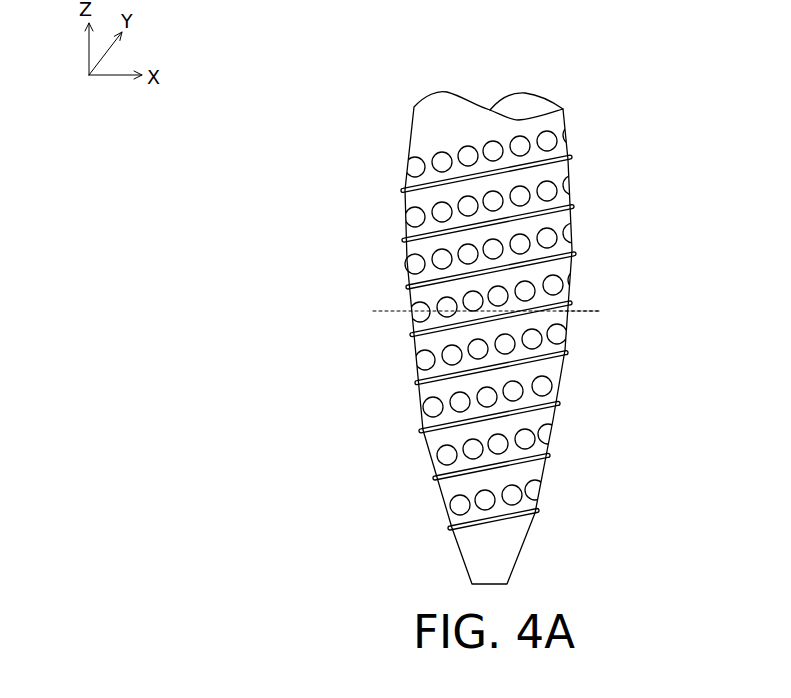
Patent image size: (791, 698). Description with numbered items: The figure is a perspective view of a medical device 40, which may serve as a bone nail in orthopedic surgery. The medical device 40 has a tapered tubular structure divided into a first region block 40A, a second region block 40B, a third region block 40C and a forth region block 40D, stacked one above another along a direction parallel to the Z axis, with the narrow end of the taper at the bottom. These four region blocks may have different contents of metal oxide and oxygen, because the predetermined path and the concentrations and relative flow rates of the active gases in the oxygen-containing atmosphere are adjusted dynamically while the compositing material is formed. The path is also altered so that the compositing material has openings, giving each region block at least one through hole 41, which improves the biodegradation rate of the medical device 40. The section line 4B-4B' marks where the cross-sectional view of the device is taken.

The medical device 40 is at (327, 98).
The through hole 41 is at (401, 268).
The first region block 40A is at (658, 468).
The second region block 40B is at (500, 468).
The third region block 40C is at (500, 372).
The forth region block 40D is at (500, 273).
The section line 4B-4B' 4B is at (456, 344).
The section line 4B- 4B' is at (581, 339).